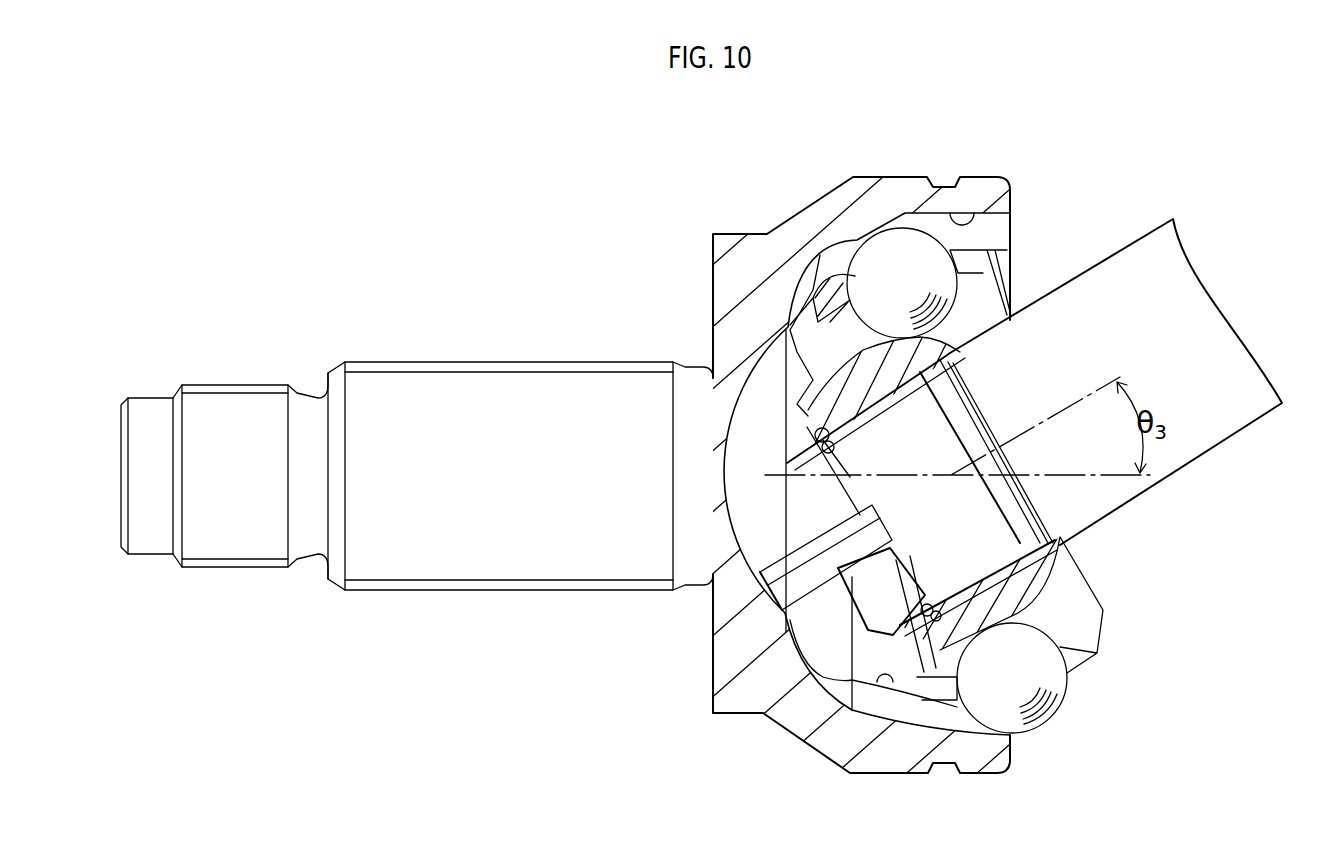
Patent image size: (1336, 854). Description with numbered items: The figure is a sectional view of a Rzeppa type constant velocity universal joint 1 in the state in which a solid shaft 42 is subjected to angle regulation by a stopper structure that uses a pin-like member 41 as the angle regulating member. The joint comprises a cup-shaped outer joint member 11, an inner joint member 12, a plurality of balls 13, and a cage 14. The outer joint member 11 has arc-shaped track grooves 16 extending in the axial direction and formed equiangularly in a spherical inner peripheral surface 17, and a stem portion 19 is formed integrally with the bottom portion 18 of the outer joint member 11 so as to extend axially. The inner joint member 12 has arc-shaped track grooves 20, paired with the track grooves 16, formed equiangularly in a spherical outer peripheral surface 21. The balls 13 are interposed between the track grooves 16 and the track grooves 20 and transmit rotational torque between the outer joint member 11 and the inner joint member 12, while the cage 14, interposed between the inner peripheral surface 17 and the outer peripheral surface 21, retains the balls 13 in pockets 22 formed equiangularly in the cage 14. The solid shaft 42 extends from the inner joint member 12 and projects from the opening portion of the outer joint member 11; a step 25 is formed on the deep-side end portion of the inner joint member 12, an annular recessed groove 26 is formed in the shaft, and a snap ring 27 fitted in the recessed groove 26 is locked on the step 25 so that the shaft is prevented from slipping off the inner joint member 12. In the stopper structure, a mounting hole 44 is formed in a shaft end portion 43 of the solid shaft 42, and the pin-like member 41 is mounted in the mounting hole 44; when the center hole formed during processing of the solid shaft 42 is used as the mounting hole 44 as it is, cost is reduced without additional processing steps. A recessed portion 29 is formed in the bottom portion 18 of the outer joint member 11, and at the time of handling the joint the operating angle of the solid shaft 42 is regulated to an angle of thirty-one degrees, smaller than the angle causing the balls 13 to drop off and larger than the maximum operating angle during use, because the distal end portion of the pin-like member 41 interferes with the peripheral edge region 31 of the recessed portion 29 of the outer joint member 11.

The constant velocity universal joint 1 is at (650, 199).
The outer joint member 11 is at (803, 197).
The inner joint member 12 is at (1073, 548).
The balls 13 is at (1060, 722).
The cage 14 is at (1105, 663).
The track grooves 16 is at (962, 222).
The spherical inner peripheral surface 17 is at (885, 687).
The bottom portion 18 is at (740, 705).
The stem portion 19 is at (471, 390).
The track grooves 20 is at (1057, 585).
The spherical outer peripheral surface 21 is at (1100, 625).
The pockets 22 is at (1060, 677).
The step 25 is at (816, 432).
The recessed groove 26 is at (835, 445).
The snap ring 27 is at (926, 603).
The recessed portion 29 is at (740, 490).
The peripheral edge region 31 is at (783, 330).
The pin-like member 41 is at (811, 602).
The solid shaft 42 is at (1086, 258).
The shaft end portion 43 is at (868, 614).
The mounting hole 44 is at (820, 540).